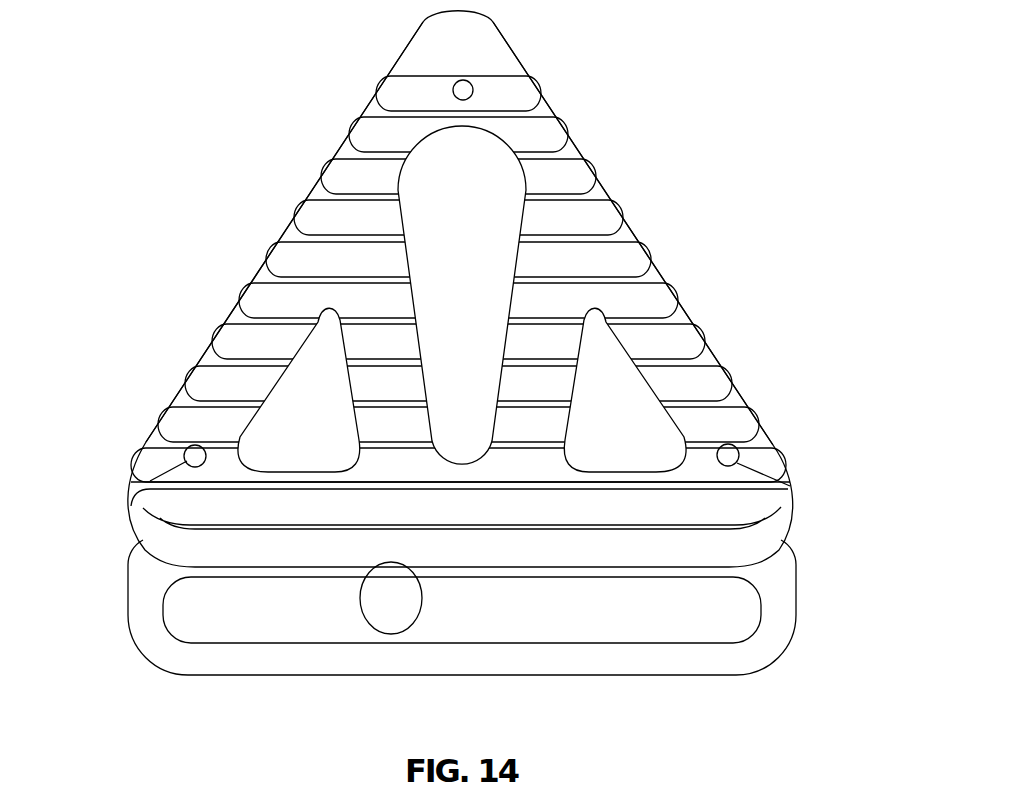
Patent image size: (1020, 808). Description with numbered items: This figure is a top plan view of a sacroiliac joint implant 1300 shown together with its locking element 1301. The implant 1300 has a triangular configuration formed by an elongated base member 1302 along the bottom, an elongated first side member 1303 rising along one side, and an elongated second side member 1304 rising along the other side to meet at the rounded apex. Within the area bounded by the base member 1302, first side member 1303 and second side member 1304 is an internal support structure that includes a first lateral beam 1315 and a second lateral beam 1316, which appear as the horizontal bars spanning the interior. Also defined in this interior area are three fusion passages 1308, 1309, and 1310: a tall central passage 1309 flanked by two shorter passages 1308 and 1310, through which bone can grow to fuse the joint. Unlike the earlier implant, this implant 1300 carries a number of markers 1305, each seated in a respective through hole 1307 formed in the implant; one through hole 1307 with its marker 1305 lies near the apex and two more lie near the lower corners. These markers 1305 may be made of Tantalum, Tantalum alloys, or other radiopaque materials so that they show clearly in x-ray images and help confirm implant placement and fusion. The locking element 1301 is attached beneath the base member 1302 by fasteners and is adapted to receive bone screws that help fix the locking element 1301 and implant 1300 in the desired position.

The SI joint implant 1300 is at (730, 161).
The locking element 1301 is at (640, 677).
The elongated base member 1302 is at (762, 512).
The elongated first side member 1303 is at (315, 190).
The elongated second side member 1304 is at (657, 275).
The marker 1305 is at (463, 82).
The through hole 1307 is at (469, 97).
The fusion passage 1308 is at (340, 421).
The fusion passage 1309 is at (494, 270).
The fusion passage 1310 is at (652, 421).
The first lateral beam 1315 is at (360, 305).
The second lateral beam 1316 is at (550, 348).